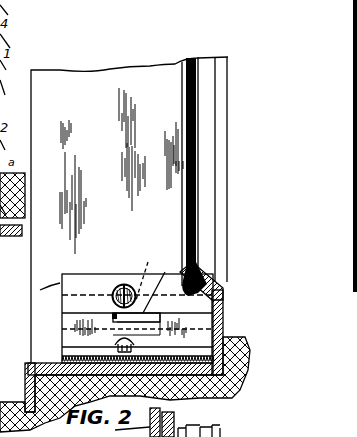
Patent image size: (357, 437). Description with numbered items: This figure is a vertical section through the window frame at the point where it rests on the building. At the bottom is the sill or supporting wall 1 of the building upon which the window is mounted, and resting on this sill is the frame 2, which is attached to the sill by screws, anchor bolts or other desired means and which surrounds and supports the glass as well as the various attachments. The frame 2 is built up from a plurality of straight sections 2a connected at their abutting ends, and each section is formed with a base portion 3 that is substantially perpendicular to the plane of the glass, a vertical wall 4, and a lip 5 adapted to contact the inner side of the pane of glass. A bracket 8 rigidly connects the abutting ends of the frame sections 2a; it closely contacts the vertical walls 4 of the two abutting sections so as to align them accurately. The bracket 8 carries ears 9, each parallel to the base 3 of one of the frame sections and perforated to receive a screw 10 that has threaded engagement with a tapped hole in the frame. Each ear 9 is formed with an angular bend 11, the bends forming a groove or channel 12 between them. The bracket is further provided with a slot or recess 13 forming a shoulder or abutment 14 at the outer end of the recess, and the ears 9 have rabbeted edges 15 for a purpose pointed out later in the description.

The sill or supporting wall 1 is at (232, 385).
The frame 2 is at (168, 184).
The straight sections 2a is at (210, 238).
The base portion 3 is at (104, 82).
The vertical wall 4 is at (247, 338).
The lip 5 is at (197, 263).
The bracket 8 is at (40, 290).
The ear 9 is at (88, 285).
The screw 10 is at (128, 285).
The angular bend 11 is at (62, 305).
The groove or channel 12 is at (62, 332).
The slot or recess 13 is at (165, 272).
The shoulder or abutment 14 is at (140, 290).
The rabbeted edge 15 is at (138, 375).